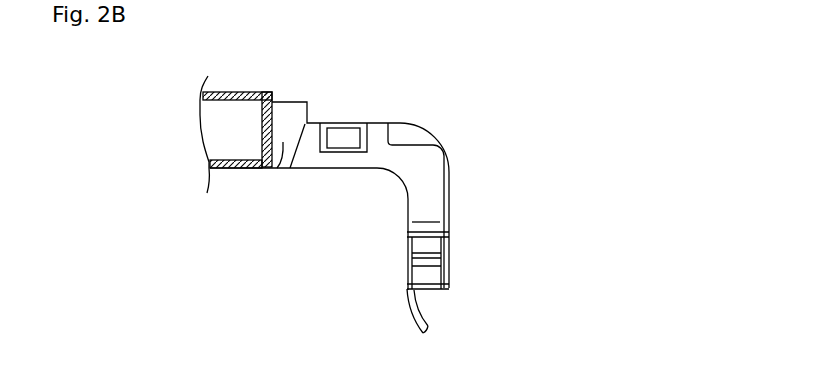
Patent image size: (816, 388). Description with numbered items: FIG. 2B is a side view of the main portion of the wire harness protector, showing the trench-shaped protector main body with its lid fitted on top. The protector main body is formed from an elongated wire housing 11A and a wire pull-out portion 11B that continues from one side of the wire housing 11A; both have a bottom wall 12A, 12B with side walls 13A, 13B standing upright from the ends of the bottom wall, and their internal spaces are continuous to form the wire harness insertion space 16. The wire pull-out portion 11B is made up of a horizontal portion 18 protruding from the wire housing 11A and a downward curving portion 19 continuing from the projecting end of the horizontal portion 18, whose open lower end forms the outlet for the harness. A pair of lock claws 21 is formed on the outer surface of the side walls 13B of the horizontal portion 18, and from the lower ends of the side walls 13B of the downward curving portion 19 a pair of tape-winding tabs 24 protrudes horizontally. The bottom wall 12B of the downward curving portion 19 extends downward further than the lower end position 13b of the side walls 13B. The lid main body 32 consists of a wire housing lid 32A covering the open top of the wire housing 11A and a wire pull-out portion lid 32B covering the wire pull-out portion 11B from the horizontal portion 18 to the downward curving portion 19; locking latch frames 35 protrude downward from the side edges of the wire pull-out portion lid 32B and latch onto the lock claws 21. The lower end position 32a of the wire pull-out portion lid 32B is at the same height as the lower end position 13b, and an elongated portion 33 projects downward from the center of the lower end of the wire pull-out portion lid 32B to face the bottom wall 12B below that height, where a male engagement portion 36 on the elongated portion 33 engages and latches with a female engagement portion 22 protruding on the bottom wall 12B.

The wire harness insertion space 16 is at (218, 131).
The lid main body 32 is at (258, 41).
The wire housing lid 32A is at (237, 91).
The wire pull-out portion lid 32B is at (380, 121).
The wire housing 11A is at (225, 170).
The bottom wall 12A is at (245, 171).
The side wall 13A is at (276, 170).
The lock claw 21 is at (343, 138).
The locking latch frame 35 is at (352, 152).
The wire pull-out portion 11B is at (278, 273).
The horizontal portion 18 is at (325, 170).
The downward curving portion 19 is at (403, 200).
The bottom wall 12B is at (408, 293).
The side wall 13B is at (420, 178).
The tape-winding tab 24 is at (427, 223).
The lower end position of wire pull-out portion lid 32a is at (452, 247).
The lower end position of side walls 13b is at (444, 260).
The elongated portion 33 is at (449, 272).
The male engagement portion 36 is at (443, 289).
The female engagement portion 22 is at (432, 291).